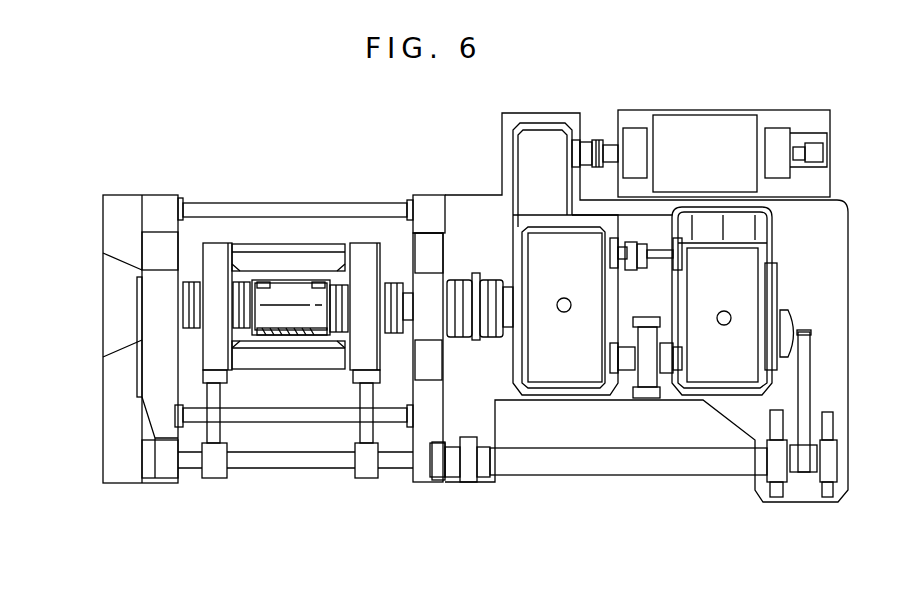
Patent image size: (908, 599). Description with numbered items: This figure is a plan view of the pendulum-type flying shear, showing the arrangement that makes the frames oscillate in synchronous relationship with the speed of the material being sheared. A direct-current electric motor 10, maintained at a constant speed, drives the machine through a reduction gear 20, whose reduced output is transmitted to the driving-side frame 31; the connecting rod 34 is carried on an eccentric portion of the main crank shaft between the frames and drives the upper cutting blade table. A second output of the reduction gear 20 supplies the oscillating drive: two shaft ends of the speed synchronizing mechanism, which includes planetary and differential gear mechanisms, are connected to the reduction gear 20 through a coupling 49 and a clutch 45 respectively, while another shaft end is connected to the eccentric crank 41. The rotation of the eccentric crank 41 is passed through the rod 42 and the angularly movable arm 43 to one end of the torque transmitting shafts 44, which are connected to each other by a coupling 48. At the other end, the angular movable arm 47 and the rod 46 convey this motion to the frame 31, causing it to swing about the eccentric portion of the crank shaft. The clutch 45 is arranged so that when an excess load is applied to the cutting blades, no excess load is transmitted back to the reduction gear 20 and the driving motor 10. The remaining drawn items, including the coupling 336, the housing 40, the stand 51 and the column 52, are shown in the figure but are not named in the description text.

The direct-current electric motor 10 is at (724, 153).
The reduction gear 20 is at (560, 186).
The frame 31 is at (216, 265).
The connecting rod 34 is at (291, 290).
The coupling 336 is at (484, 336).
The gear box 40 is at (739, 291).
The eccentric crank 41 is at (791, 330).
The rod 42 is at (810, 374).
The angularly movable arm 43 is at (812, 478).
The torque transmitting shaft 44 is at (305, 462).
The clutch 45 is at (650, 398).
The rod 46 is at (217, 392).
The angular movable arm 47 is at (218, 470).
The coupling 48 is at (470, 470).
The coupling 49 is at (641, 246).
The stand 51 is at (162, 205).
The column 52 is at (430, 210).